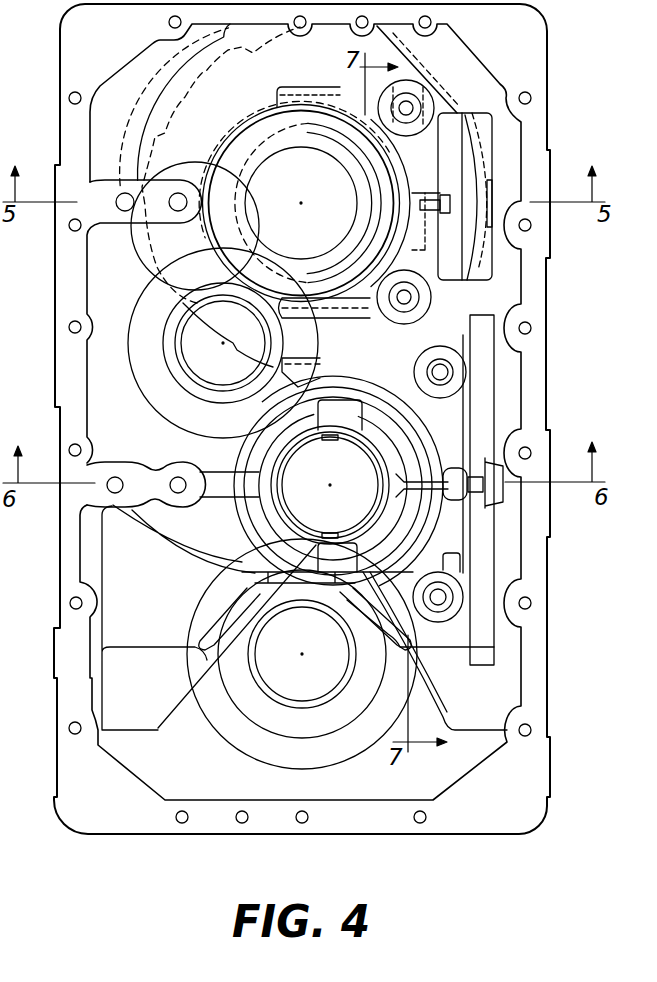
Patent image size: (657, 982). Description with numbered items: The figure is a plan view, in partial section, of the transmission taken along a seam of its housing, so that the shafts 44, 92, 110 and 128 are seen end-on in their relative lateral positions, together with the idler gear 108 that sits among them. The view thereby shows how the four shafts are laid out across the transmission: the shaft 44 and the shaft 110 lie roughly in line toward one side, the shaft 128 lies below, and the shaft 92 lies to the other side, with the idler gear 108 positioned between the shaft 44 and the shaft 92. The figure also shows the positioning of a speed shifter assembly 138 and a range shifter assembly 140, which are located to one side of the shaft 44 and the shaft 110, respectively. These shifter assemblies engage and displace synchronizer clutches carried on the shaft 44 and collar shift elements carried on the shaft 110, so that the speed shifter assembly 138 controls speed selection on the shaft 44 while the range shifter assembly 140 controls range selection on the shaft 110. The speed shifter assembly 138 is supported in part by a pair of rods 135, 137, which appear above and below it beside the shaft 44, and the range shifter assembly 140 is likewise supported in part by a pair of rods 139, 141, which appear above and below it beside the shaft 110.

The shaft 44 is at (250, 116).
The shaft 92 is at (170, 413).
The idler gear 108 is at (184, 163).
The shaft 110 is at (283, 505).
The shaft 128 is at (299, 703).
The rod 135 is at (407, 100).
The rod 137 is at (412, 298).
The speed shifter assembly 138 is at (483, 137).
The rod 139 is at (436, 360).
The range shifter assembly 140 is at (484, 626).
The rod 141 is at (432, 622).